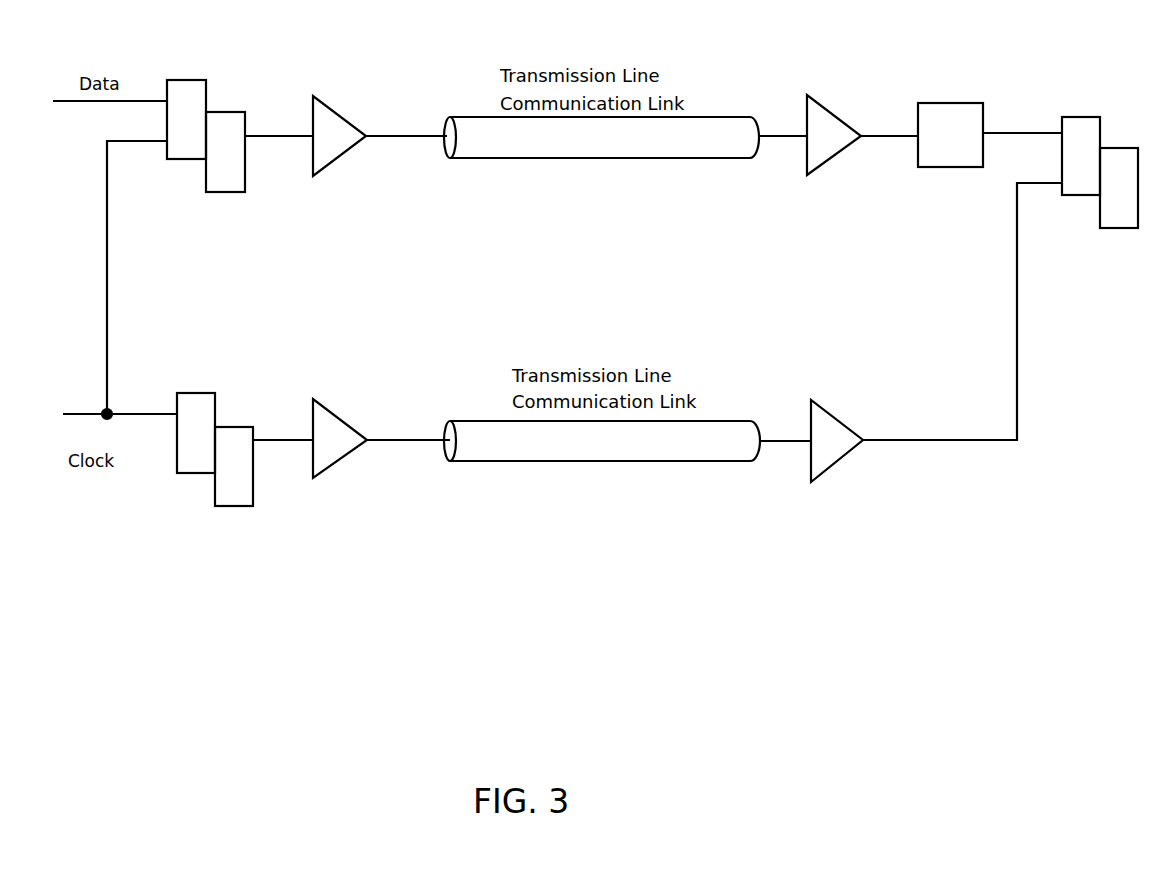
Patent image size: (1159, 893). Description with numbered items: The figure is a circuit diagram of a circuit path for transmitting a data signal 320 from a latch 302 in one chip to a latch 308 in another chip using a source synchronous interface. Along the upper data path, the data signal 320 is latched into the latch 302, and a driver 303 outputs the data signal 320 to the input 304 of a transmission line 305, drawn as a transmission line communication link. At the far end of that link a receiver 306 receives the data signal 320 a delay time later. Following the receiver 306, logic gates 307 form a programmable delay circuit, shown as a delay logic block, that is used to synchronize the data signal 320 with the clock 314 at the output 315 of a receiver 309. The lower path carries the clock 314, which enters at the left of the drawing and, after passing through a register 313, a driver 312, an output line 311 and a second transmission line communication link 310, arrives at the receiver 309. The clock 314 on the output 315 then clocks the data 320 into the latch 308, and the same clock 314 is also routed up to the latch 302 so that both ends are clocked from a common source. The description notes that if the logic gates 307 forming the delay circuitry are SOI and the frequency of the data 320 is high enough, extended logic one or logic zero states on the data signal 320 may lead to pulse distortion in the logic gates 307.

The latch 302 is at (192, 95).
The driver 303 is at (331, 122).
The input of transmission line 304 is at (406, 128).
The transmission line 305 is at (620, 138).
The receiver 306 is at (830, 127).
The logic gates 307 is at (942, 112).
The latch 308 is at (1067, 128).
The receiver 309 is at (822, 410).
The clock transmission line communication link 310 is at (628, 443).
The clock driver output line 311 is at (397, 438).
The clock driver buffer 312 is at (330, 423).
The clock flip-flop / register 313 is at (192, 403).
The clock 314 is at (63, 413).
The output of receiver 315 is at (930, 437).
The data signal 320 is at (103, 98).